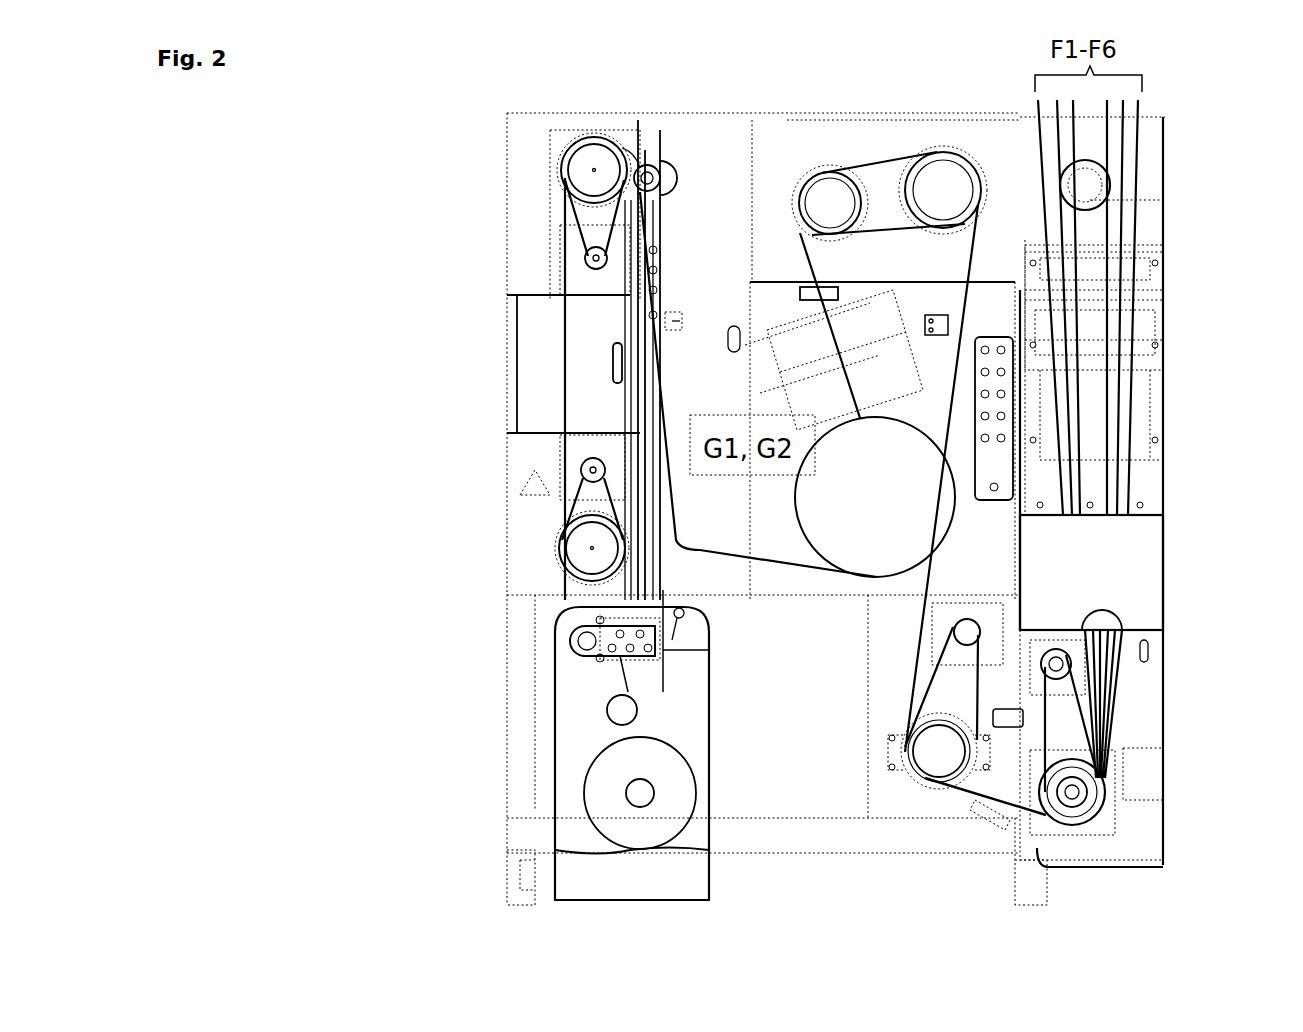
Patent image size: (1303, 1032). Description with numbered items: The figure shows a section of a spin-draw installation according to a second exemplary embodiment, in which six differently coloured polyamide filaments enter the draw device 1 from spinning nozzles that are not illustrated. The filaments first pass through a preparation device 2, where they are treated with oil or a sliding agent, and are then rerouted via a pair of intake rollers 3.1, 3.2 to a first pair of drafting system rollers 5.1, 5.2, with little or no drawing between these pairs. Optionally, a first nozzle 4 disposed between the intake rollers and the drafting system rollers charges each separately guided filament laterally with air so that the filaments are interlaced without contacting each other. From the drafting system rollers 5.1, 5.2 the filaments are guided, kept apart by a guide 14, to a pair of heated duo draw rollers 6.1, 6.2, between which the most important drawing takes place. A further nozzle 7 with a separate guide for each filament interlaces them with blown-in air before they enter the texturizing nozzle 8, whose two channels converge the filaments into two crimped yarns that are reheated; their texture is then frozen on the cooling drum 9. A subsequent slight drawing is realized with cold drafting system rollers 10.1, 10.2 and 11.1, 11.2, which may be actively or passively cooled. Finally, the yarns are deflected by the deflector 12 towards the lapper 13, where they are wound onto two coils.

The draw device 1 is at (412, 78).
The preparation device 2 is at (1157, 250).
The intake roller 3.1 is at (1080, 762).
The intake roller 3.2 is at (1057, 662).
The first nozzle 4 is at (985, 812).
The drafting system roller 5.1 is at (923, 745).
The drafting system roller 5.2 is at (950, 632).
The draw roller 6.1 is at (935, 180).
The draw roller 6.2 is at (817, 192).
The nozzle 7 is at (800, 288).
The texturizing nozzle 8 is at (803, 330).
The cooling drum 9 is at (880, 505).
The drafting system roller 10.1 is at (578, 168).
The drafting system roller 10.2 is at (583, 253).
The drafting system roller 11.1 is at (575, 540).
The drafting system roller 11.2 is at (578, 468).
The deflector 12 is at (636, 165).
The lapper 13 is at (597, 787).
The guide 14 is at (948, 327).